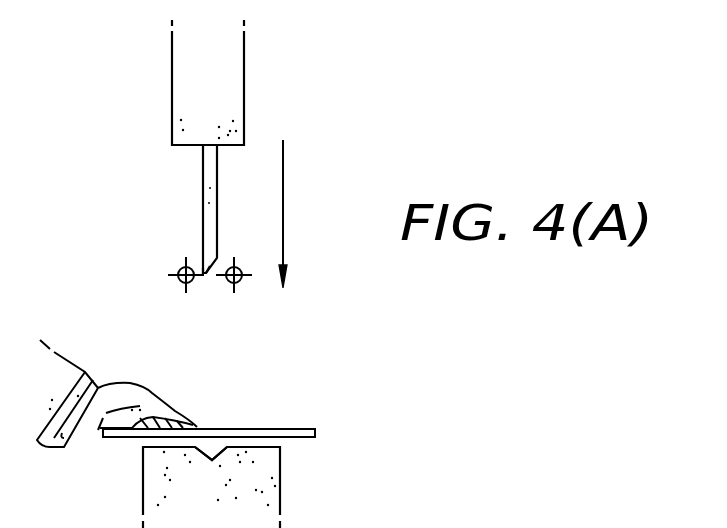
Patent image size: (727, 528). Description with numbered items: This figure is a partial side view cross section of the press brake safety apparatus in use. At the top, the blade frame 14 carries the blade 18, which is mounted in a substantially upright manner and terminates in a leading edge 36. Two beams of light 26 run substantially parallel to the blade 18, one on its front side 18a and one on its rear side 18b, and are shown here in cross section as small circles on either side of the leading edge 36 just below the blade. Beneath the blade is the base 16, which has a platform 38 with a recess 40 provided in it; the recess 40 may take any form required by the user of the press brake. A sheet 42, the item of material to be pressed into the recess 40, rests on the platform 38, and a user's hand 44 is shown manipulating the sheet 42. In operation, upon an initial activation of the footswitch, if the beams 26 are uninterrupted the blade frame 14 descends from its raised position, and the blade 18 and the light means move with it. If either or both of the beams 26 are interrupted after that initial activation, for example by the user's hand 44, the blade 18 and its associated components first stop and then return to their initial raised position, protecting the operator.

The blade frame 14 is at (245, 50).
The blade 18 is at (208, 163).
The front side 18a is at (103, 104).
The rear side 18b is at (330, 100).
The beam of light 26 is at (170, 283).
The leading edge 36 is at (208, 278).
The sheet 42 is at (292, 427).
The base 16 is at (282, 478).
The recess 40 is at (202, 471).
The platform 38 is at (163, 450).
The user's hand 44 is at (105, 417).